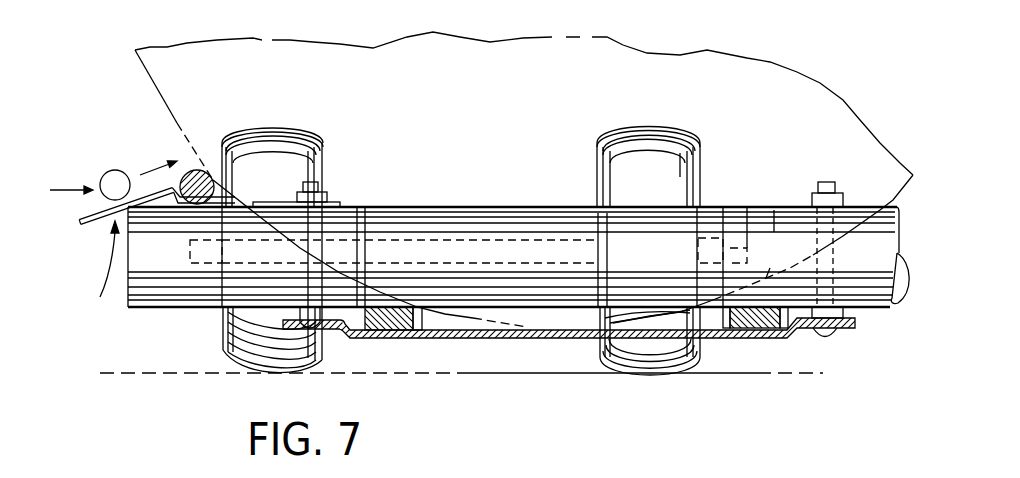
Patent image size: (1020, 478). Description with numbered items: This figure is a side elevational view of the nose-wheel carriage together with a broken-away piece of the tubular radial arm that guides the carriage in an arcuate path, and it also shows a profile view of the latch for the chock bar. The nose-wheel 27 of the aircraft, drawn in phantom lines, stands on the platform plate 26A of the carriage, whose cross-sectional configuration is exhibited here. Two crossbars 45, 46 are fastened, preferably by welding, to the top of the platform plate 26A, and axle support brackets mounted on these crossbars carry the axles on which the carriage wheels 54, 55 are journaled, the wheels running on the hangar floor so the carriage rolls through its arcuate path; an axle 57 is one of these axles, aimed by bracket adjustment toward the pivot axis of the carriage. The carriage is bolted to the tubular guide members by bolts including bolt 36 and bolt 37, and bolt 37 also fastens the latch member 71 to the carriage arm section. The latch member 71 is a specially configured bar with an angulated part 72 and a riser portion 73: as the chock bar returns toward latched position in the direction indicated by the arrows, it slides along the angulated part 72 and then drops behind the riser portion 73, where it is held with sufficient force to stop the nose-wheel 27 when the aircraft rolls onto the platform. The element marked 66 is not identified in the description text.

The nose-wheel 27 is at (200, 67).
The rod 66 is at (193, 173).
The carriage wheel 55 is at (287, 178).
The bolt 37 is at (330, 192).
The carriage wheel 54 is at (620, 191).
The bolt 36 is at (827, 182).
The axle 57 is at (774, 210).
The angulated part 72 is at (83, 224).
The riser portion 73 is at (173, 192).
The latch member 71 is at (98, 267).
The crossbar 46 is at (394, 338).
The platform plate 26A is at (553, 340).
The crossbar 45 is at (752, 337).